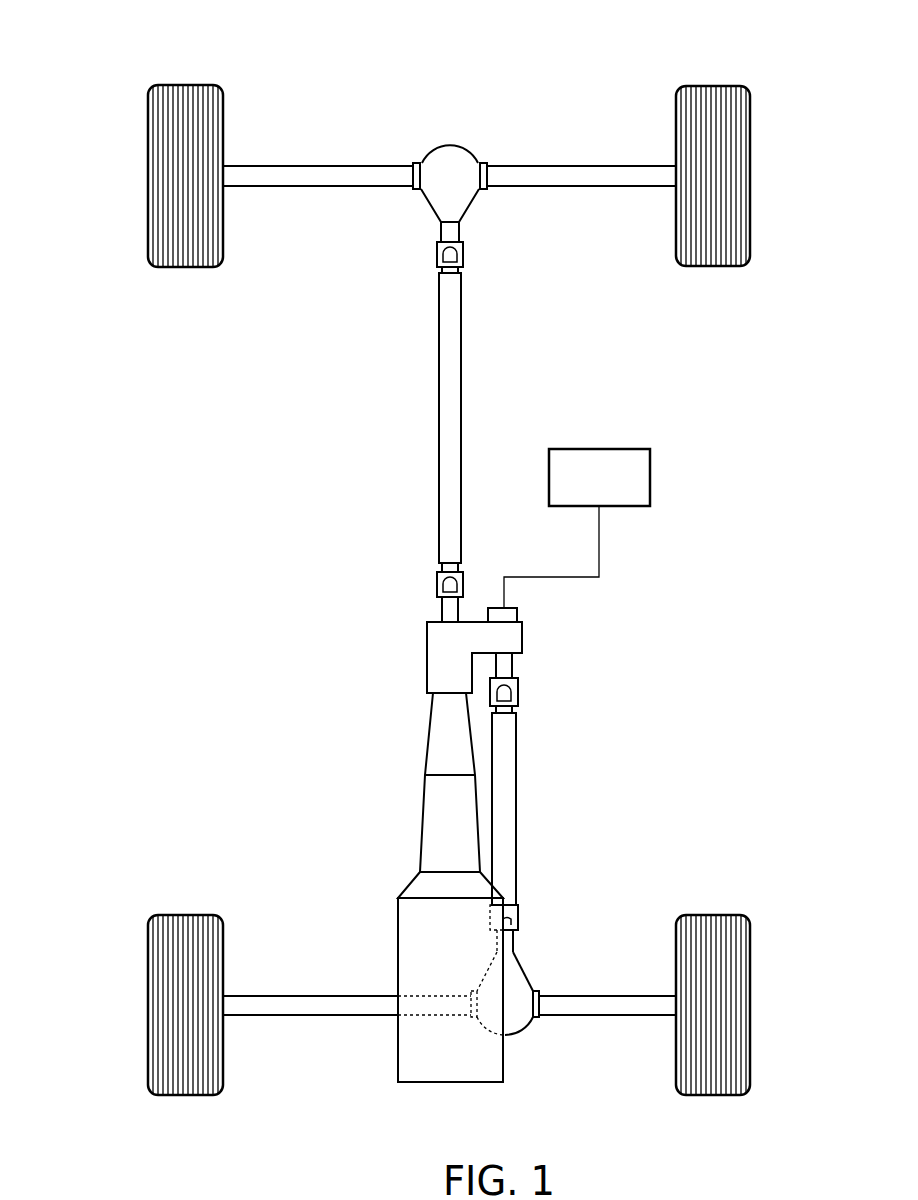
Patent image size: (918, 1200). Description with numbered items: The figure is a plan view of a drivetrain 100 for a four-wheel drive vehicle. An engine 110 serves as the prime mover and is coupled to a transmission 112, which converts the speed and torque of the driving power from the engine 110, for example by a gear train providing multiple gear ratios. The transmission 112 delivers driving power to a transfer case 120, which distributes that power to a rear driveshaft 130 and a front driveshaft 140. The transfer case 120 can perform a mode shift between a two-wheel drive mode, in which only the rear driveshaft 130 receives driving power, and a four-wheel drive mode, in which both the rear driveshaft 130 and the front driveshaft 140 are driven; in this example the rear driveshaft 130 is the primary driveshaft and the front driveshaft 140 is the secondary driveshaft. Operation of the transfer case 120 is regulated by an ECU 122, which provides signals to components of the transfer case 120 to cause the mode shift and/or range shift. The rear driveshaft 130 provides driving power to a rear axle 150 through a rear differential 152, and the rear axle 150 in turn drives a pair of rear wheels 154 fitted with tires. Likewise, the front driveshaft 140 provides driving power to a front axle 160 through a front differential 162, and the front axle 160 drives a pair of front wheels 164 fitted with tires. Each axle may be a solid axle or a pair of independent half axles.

The drivetrain 100 is at (97, 106).
The engine 110 is at (407, 947).
The transmission 112 is at (427, 822).
The transfer case 120 is at (435, 657).
The ECU 122 is at (652, 478).
The rear driveshaft 130 is at (452, 418).
The front driveshaft 140 is at (510, 793).
The rear axle 150 is at (593, 170).
The rear differential 152 is at (457, 150).
The rear wheels 154 is at (223, 118).
The front axle 160 is at (620, 1005).
The front differential 162 is at (520, 983).
The front wheels 164 is at (191, 915).